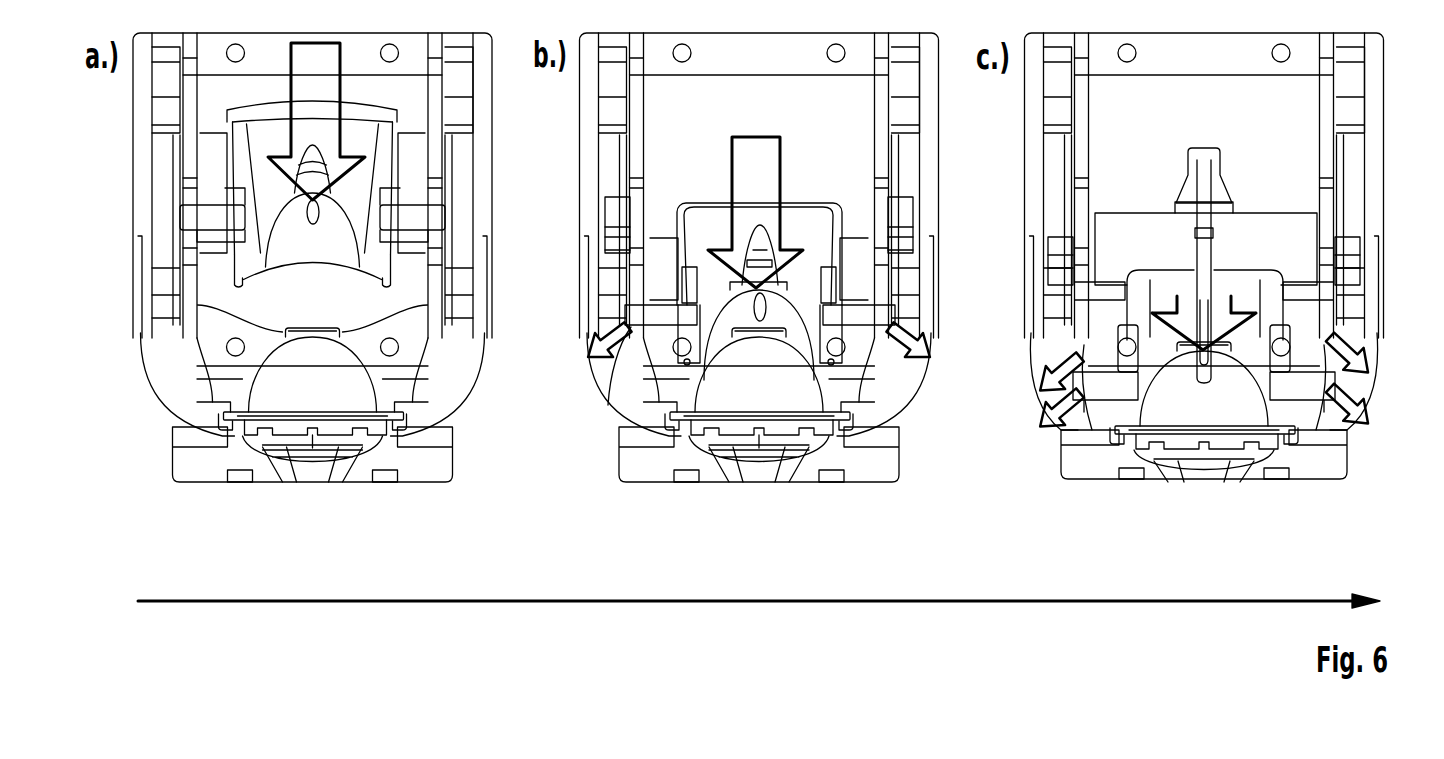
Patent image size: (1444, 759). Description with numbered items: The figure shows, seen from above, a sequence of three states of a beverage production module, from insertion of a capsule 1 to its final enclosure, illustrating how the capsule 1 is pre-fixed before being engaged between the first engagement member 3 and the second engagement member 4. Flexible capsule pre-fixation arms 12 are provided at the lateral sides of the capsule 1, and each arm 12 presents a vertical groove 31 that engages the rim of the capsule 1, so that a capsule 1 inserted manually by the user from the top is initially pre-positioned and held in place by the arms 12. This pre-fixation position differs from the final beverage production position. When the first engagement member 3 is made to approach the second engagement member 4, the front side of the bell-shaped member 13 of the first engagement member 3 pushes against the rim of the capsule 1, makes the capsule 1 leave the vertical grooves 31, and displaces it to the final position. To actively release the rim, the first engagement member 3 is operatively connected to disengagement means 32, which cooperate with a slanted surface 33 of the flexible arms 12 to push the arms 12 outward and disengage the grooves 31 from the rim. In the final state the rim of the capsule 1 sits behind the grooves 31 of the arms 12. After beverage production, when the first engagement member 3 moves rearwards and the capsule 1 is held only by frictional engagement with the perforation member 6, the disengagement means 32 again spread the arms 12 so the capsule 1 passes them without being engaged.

The capsule 1 is at (270, 468).
The first engagement member 3 is at (240, 290).
The second engagement member 4 is at (872, 473).
The perforation member 6 is at (1220, 377).
The flexible capsule pre-fixation arms 12 is at (150, 390).
The bell-shaped member 13 is at (702, 350).
The vertical groove 31 is at (225, 430).
The disengagement means 32 is at (620, 310).
The slanted surface 33 is at (630, 340).